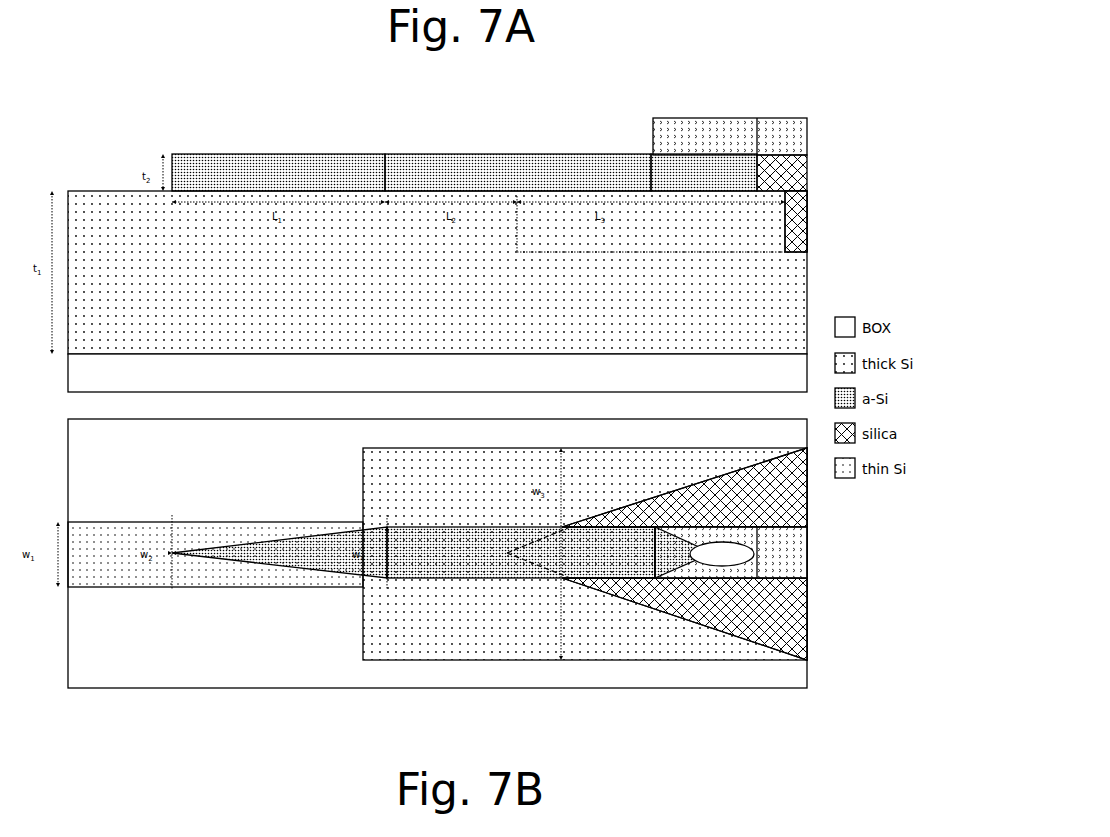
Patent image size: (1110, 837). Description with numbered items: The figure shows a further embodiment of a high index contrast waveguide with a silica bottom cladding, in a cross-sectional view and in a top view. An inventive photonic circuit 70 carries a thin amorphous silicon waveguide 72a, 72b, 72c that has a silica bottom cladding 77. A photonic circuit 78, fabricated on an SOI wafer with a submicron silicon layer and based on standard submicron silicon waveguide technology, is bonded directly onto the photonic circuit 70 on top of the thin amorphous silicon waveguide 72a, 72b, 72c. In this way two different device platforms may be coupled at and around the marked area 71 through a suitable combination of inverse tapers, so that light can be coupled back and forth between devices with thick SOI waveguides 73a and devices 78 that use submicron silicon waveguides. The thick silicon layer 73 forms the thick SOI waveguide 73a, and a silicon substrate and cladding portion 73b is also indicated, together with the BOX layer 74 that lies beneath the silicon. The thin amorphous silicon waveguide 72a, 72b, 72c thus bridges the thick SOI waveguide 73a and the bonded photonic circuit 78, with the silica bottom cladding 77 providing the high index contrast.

In FIG. 7A, the photonic circuit 70 is at (60, 157).
In FIG. 7B, the marked area 71 is at (712, 557).
In FIG. 7A, the thin amorphous silicon waveguide 72a is at (700, 175).
In FIG. 7B, the thin amorphous silicon waveguide 72a is at (707, 542).
In FIG. 7A, the thin amorphous silicon waveguide 72b is at (255, 160).
In FIG. 7B, the thin amorphous silicon waveguide 72b is at (283, 567).
In FIG. 7A, the thin amorphous silicon waveguide 72c is at (493, 157).
In FIG. 7B, the thin amorphous silicon waveguide 72c is at (440, 537).
In FIG. 7A, the thick silicon layer 73 is at (143, 230).
In FIG. 7B, the thick SOI waveguide 73a is at (123, 547).
In FIG. 7B, the silicon substrate and cladding portion 73b is at (393, 628).
In FIG. 7A, the BOX layer 74 is at (120, 372).
In FIG. 7A, the silica bottom cladding 77 is at (808, 172).
In FIG. 7B, the silica bottom cladding 77 is at (807, 650).
In FIG. 7A, the photonic circuit 78 is at (783, 120).
In FIG. 7B, the photonic circuit 78 is at (792, 552).